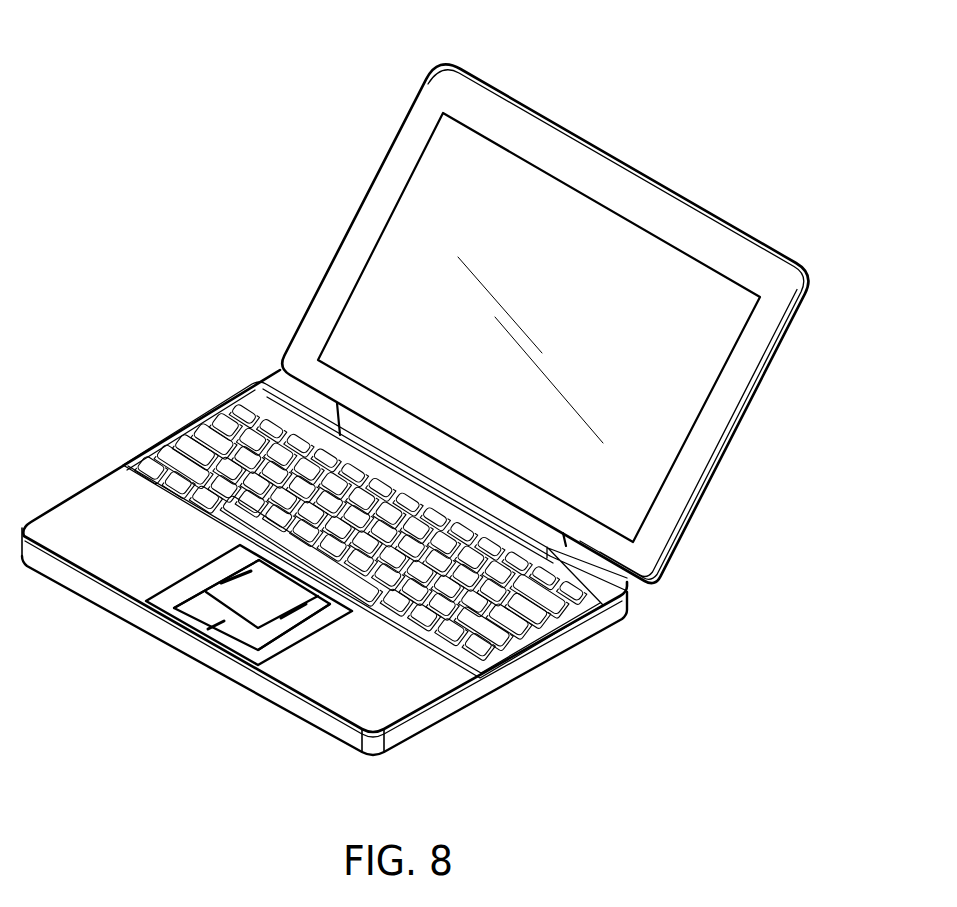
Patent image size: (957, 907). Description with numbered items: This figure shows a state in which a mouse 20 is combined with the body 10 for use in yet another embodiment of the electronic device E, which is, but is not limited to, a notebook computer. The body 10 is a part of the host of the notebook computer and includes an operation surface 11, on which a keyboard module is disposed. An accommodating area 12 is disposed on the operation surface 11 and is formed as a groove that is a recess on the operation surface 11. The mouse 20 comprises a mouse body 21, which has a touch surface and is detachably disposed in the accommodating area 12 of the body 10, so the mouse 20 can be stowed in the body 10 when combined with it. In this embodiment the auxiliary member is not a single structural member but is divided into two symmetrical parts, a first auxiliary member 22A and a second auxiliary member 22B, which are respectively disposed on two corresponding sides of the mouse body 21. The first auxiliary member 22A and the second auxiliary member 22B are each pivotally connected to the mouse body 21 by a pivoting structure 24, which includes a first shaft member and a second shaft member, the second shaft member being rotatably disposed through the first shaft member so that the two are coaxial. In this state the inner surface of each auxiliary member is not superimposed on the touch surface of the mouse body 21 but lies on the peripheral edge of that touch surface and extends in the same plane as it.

The body 10 is at (320, 566).
The operation surface 11 is at (95, 553).
The accommodating area 12 is at (167, 602).
The mouse 20 is at (201, 660).
The mouse body 21 is at (213, 620).
The first auxiliary member 22A is at (283, 683).
The second auxiliary member 22B is at (175, 574).
The pivoting structure 24 is at (280, 628).
The electronic device E is at (295, 266).